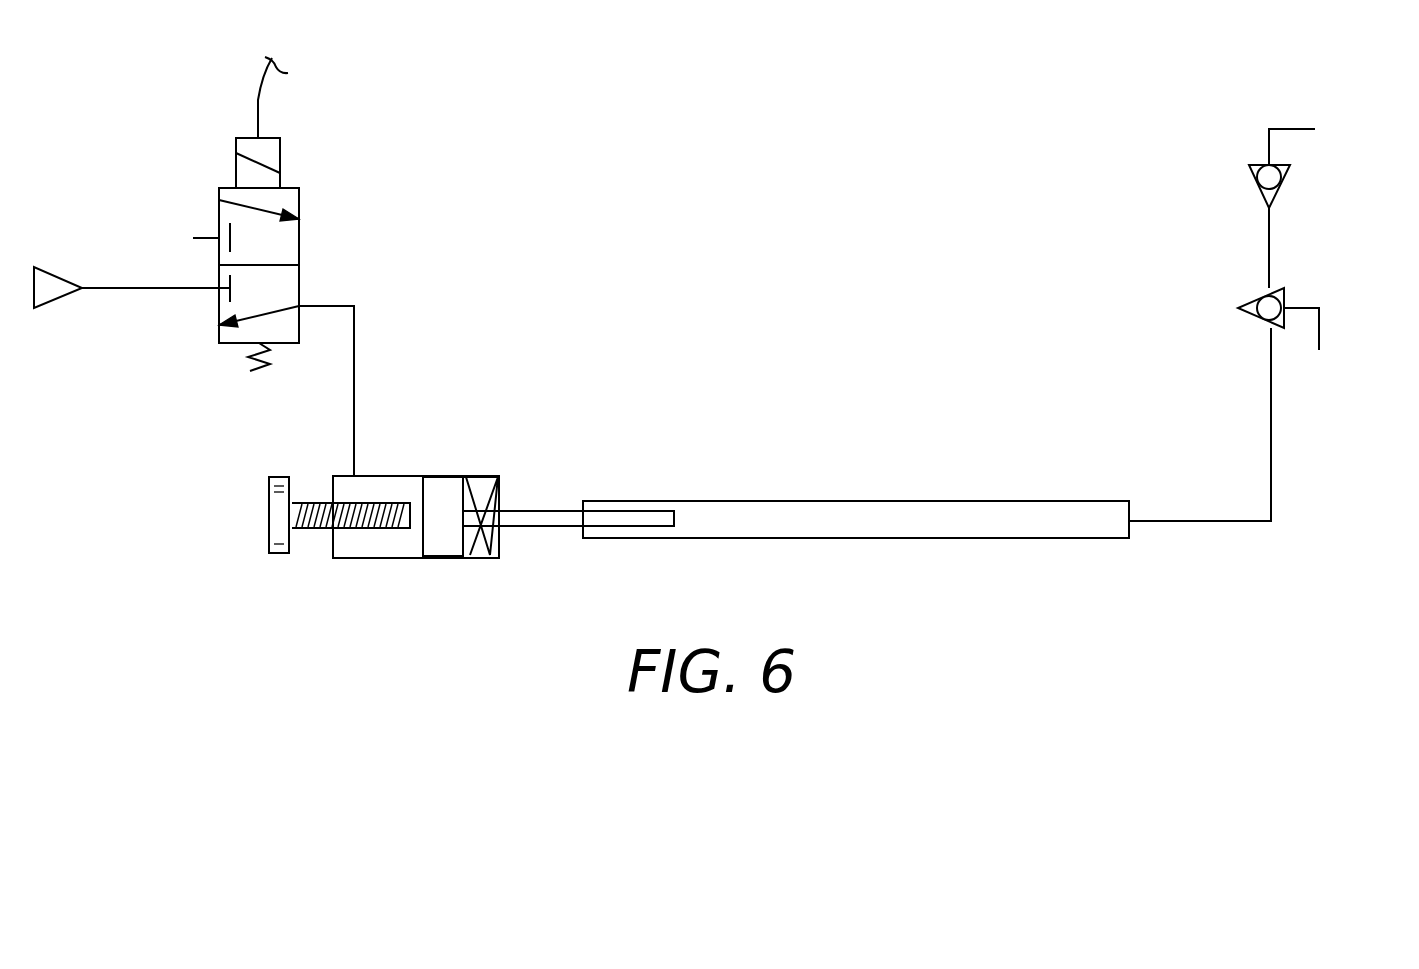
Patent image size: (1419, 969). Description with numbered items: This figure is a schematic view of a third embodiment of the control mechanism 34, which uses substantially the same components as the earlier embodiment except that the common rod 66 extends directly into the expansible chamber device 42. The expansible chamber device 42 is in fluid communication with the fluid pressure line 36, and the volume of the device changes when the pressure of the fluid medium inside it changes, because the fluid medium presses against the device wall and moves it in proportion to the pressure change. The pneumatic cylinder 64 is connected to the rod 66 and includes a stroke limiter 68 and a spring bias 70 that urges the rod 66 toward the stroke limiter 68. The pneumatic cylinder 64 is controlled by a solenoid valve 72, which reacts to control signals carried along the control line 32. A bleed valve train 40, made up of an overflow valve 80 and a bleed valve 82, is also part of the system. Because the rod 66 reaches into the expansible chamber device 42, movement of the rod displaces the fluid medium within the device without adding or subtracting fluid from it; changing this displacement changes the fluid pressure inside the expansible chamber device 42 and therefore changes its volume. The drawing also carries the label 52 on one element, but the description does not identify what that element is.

The control line 32 is at (257, 98).
The solenoid valve 72 is at (299, 201).
The fluid pressure line 36 is at (120, 288).
The control mechanism 34 is at (473, 408).
The pneumatic cylinder 64 is at (392, 476).
The stroke limiter 68 is at (311, 503).
The spring bias 70 is at (463, 545).
The common rod 66 is at (540, 508).
The expansible chamber device 42 is at (889, 540).
The fluid line 52 is at (1206, 521).
The bleed valve train 40 is at (1345, 255).
The overflow valve 80 is at (1256, 300).
The bleed valve 82 is at (1285, 182).